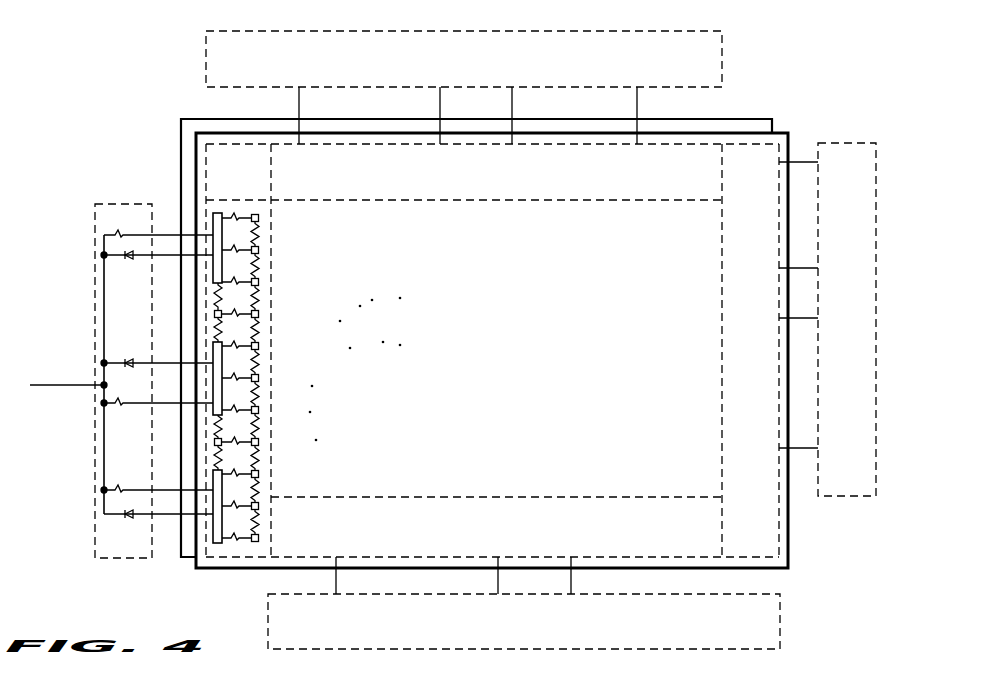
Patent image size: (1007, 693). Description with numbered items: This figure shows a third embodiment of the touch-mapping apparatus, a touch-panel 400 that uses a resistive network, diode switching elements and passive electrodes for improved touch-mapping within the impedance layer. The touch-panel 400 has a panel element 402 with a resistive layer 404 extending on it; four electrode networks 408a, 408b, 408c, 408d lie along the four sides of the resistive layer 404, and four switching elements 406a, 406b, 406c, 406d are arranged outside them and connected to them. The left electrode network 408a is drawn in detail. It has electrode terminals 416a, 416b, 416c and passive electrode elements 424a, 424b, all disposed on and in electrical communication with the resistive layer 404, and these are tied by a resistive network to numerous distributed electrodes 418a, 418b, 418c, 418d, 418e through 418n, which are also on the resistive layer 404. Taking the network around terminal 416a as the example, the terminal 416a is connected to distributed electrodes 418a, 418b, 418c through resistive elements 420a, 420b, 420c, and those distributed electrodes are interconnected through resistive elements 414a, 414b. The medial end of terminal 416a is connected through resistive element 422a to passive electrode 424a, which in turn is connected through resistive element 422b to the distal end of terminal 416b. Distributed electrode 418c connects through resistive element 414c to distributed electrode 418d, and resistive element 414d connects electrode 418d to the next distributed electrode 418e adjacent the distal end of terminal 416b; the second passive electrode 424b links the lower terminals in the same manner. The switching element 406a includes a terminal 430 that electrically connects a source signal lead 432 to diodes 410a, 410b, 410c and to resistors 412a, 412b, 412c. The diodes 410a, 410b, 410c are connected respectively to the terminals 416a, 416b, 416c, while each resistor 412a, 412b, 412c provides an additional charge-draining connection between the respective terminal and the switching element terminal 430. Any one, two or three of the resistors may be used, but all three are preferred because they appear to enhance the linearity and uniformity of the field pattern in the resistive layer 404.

The touch-panel 400 is at (128, 99).
The panel element 402 is at (212, 119).
The resistive layer 404 is at (405, 134).
The switching element 406a is at (100, 205).
The switching element 406b is at (390, 30).
The switching element 406c is at (871, 497).
The switching element 406d is at (780, 614).
The electrode network 408a is at (271, 474).
The electrode network 408b is at (490, 195).
The electrode network 408c is at (722, 385).
The electrode network 408d is at (412, 497).
The diode 410a is at (108, 256).
The diode 410b is at (110, 362).
The diode 410c is at (126, 517).
The resistor 412a is at (106, 236).
The resistor 412b is at (114, 405).
The resistor 412c is at (116, 490).
The resistive element 414a is at (258, 236).
The resistive element 414b is at (259, 268).
The resistive element 414c is at (259, 300).
The resistive element 414d is at (259, 333).
The electrode terminal 416a is at (213, 220).
The electrode terminal 416b is at (213, 378).
The electrode terminal 416c is at (213, 527).
The distributed electrode 418a is at (257, 213).
The distributed electrode 418b is at (258, 251).
The distributed electrode 418c is at (258, 283).
The distributed electrode 418d is at (258, 314).
The distributed electrode 418e is at (250, 346).
The distributed electrode 418n is at (259, 540).
The resistive element 420a is at (233, 214).
The resistive element 420b is at (238, 249).
The resistive element 420c is at (238, 281).
The resistive element 422a is at (215, 296).
The resistive element 422b is at (259, 363).
The passive electrode element 424a is at (214, 314).
The passive electrode element 424b is at (214, 442).
The terminal 430 is at (104, 470).
The source signal lead 432 is at (76, 386).